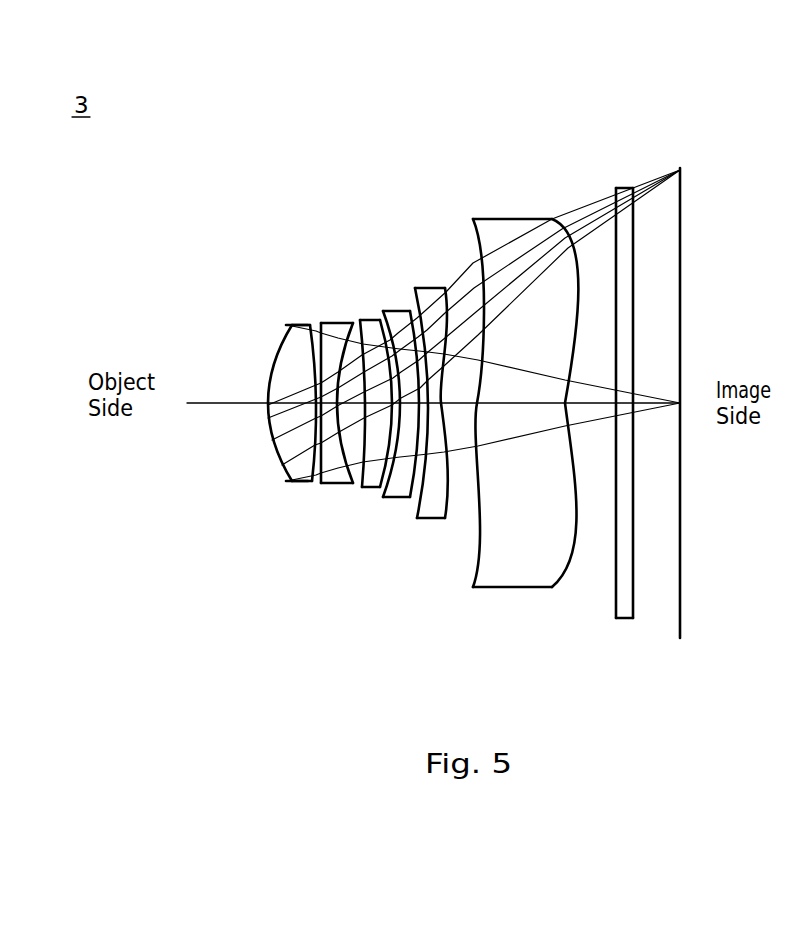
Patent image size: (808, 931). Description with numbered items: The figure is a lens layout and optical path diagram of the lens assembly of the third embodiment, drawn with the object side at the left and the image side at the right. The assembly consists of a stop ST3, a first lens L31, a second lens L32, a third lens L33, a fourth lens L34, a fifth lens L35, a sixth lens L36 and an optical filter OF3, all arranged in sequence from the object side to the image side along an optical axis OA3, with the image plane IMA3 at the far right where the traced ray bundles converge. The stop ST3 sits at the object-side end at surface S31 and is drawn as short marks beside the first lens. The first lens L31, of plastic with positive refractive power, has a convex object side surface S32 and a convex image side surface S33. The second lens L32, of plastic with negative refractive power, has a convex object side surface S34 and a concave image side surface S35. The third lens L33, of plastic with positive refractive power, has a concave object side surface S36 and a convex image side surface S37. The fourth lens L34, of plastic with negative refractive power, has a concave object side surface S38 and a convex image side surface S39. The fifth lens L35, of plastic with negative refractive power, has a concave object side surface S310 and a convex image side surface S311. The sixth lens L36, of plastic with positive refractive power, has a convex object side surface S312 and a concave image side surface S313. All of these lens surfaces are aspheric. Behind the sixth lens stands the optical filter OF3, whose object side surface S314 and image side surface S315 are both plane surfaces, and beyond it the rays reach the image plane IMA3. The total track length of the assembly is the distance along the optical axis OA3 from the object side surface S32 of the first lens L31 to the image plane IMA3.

The optical axis OA3 is at (238, 404).
The stop ST3 is at (292, 324).
The first lens L31 is at (266, 377).
The second lens L32 is at (310, 398).
The third lens L33 is at (371, 384).
The fourth lens L34 is at (410, 376).
The fifth lens L35 is at (451, 396).
The sixth lens L36 is at (525, 398).
The optical filter OF3 is at (634, 398).
The image plane IMA3 is at (700, 371).
The stop surface S31 is at (292, 483).
The object side surface of the first lens S32 is at (267, 437).
The image side surface of the first lens S33 is at (314, 483).
The object side surface of the second lens S34 is at (330, 483).
The image side surface of the second lens S35 is at (357, 487).
The object side surface of the third lens S36 is at (378, 487).
The image side surface of the third lens S37 is at (391, 497).
The object side surface of the fourth lens S38 is at (407, 497).
The image side surface of the fourth lens S39 is at (419, 498).
The object side surface of the fifth lens S310 is at (444, 518).
The image side surface of the fifth lens S311 is at (473, 567).
The object side surface of the sixth lens S312 is at (483, 500).
The image side surface of the sixth lens S313 is at (580, 520).
The object side surface of the optical filter S314 is at (616, 596).
The image side surface of the optical filter S315 is at (633, 598).